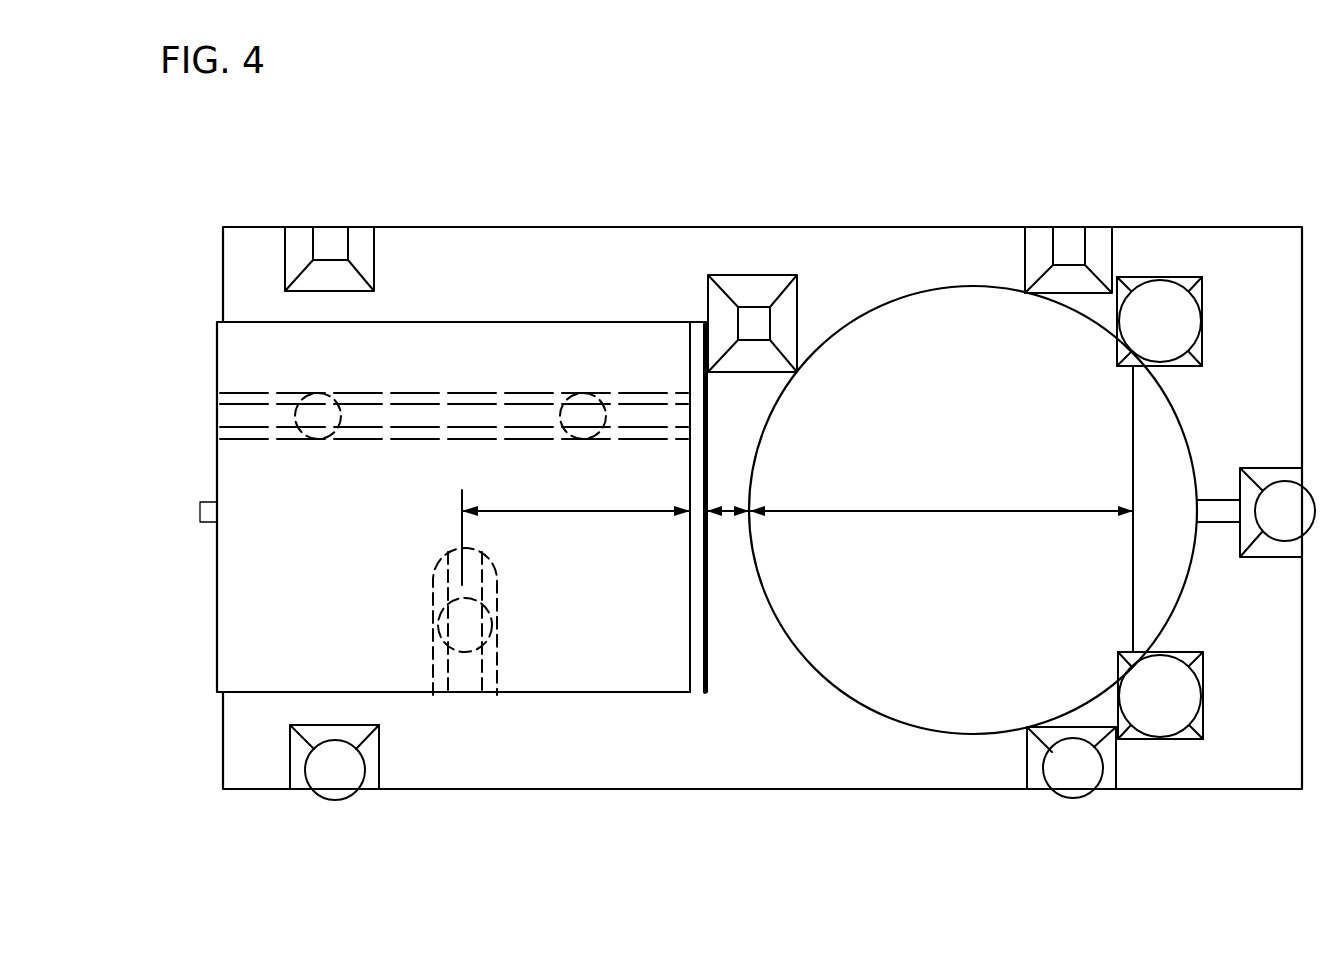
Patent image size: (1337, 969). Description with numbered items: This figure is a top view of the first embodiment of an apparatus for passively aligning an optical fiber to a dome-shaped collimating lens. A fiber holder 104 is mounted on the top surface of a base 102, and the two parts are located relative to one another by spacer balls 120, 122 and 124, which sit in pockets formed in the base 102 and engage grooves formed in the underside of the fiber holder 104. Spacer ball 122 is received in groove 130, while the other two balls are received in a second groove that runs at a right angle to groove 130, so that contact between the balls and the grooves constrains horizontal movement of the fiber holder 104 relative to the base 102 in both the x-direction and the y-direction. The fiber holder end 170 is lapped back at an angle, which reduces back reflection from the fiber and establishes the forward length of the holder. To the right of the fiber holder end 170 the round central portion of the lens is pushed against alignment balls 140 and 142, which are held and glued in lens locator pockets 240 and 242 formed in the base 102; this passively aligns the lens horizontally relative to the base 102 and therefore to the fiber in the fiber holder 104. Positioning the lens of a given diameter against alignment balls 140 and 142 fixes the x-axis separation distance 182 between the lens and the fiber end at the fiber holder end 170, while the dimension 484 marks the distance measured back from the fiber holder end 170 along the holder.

The base 102 is at (973, 790).
The fiber holder 104 is at (487, 342).
The spacer ball 120 is at (307, 396).
The spacer ball 122 is at (463, 655).
The spacer ball 124 is at (583, 394).
The groove 130 is at (497, 682).
The alignment ball 140 is at (1160, 708).
The alignment ball 142 is at (1160, 312).
The fiber holder end 170 is at (697, 336).
The x-axis separation distance 182 is at (727, 513).
The lens locator pocket 240 is at (1203, 727).
The lens locator pocket 242 is at (1203, 292).
The distance 484 is at (604, 512).